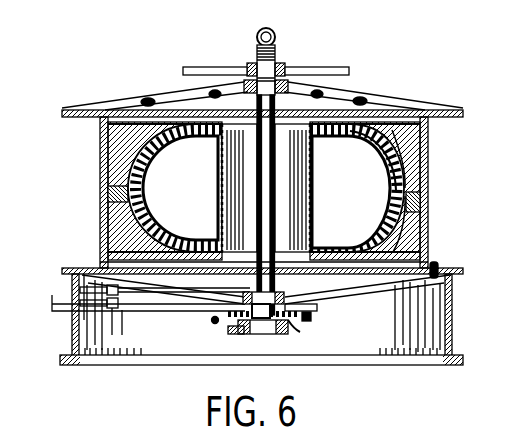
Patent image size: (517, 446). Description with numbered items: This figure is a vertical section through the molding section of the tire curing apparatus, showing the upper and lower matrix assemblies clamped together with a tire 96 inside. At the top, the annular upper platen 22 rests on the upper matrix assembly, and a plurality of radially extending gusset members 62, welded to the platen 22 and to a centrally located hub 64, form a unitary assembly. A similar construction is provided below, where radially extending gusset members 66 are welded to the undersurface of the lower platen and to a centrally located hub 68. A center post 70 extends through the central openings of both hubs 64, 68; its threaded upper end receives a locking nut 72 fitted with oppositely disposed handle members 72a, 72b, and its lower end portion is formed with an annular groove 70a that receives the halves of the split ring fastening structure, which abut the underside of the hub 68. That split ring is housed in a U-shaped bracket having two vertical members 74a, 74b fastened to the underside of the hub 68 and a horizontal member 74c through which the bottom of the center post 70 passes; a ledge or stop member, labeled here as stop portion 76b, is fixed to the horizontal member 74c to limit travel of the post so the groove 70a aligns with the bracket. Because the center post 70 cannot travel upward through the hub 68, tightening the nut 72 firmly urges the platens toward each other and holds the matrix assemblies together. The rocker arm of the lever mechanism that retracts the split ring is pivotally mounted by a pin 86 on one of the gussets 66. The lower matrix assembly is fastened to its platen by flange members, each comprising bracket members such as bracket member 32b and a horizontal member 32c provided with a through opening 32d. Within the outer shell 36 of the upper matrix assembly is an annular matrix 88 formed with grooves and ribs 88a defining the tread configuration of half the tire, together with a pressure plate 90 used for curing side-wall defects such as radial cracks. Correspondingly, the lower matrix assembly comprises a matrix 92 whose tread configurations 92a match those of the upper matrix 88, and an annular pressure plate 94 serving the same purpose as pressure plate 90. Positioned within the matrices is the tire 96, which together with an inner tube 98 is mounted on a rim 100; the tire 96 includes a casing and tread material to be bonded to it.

The upper platen 22 is at (455, 110).
The bracket member 32b is at (436, 262).
The horizontal member 32c is at (442, 270).
The through opening 32d is at (452, 286).
The outer shell 36 is at (428, 172).
The gusset member 62 is at (375, 103).
The hub 64 is at (305, 88).
The gusset member 66 is at (362, 288).
The hub 68 is at (281, 293).
The center post 70 is at (276, 122).
The annular groove 70a is at (268, 334).
The locking nut 72 is at (250, 66).
The handle member 72a is at (200, 68).
The handle member 72b is at (340, 68).
The vertical member 74a is at (214, 323).
The vertical member 74b is at (290, 328).
The horizontal member 74c is at (236, 334).
The threaded stud 76b is at (276, 56).
The pin 86 is at (312, 317).
The annular matrix 88 is at (422, 137).
The grooves and ribs 88a is at (400, 152).
The pressure plate 90 is at (362, 100).
The matrix 92 is at (422, 222).
The tread configurations 92a is at (428, 200).
The pressure plate 94 is at (337, 250).
The tire 96 is at (390, 178).
The inner tube 98 is at (372, 146).
The rim 100 is at (311, 215).